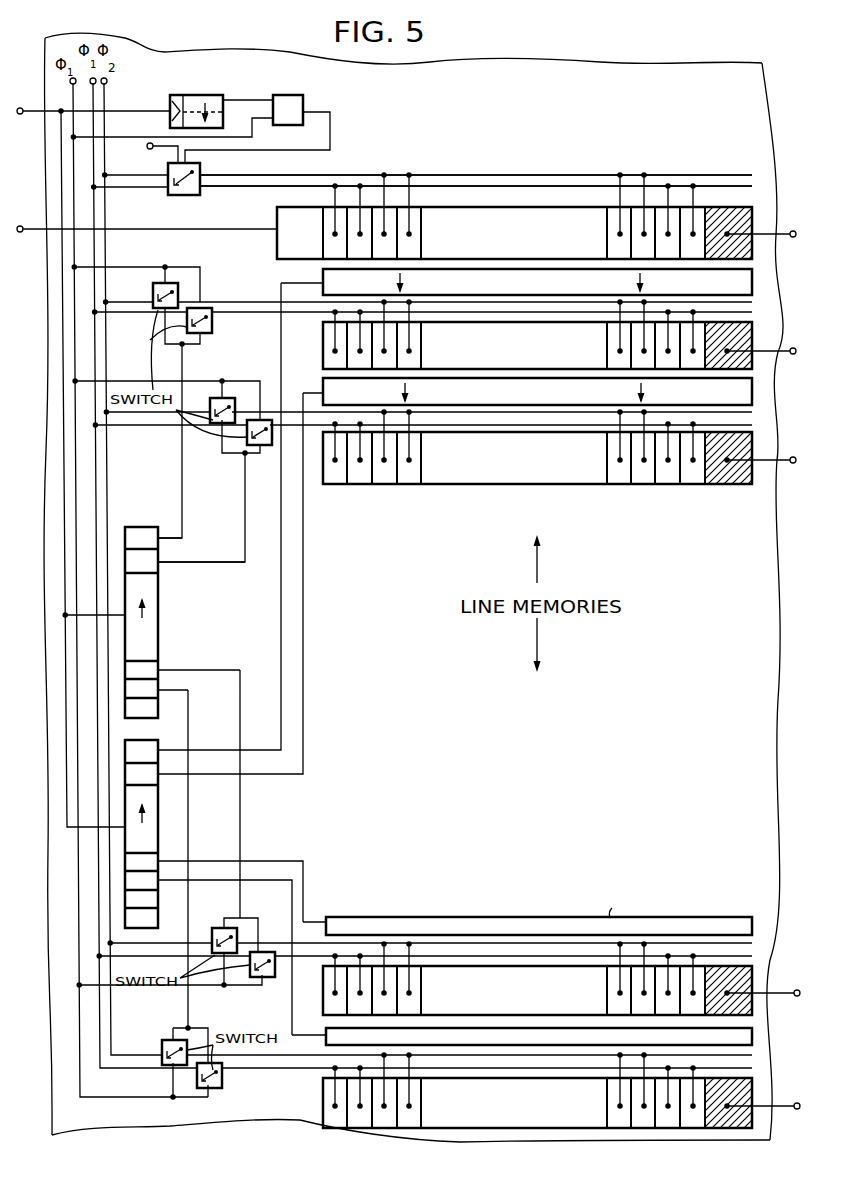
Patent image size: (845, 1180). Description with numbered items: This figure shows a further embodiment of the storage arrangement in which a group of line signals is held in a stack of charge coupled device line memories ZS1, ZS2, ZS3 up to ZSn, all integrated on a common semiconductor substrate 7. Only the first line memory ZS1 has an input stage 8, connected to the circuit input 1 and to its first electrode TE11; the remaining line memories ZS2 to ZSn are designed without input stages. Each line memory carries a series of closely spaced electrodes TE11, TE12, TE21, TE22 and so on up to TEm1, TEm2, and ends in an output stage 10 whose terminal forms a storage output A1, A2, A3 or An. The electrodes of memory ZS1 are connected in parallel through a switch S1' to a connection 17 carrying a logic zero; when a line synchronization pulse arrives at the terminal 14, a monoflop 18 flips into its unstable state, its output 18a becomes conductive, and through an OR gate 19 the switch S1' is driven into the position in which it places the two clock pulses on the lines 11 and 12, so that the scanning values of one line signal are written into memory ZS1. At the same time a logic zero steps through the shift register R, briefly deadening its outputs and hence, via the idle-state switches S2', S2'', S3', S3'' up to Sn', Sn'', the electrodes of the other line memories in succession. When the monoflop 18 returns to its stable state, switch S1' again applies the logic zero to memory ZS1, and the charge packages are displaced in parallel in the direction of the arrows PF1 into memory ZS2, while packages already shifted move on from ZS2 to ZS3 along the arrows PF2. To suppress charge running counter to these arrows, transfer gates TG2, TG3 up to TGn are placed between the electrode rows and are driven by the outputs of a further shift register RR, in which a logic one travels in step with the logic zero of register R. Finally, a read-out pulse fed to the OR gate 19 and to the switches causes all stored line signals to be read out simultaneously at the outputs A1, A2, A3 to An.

The circuit input 1 is at (147, 216).
The semiconductor substrate 7 is at (306, 1110).
The input stage 8 is at (280, 254).
The output stage 10 is at (745, 248).
The clock line 11 is at (478, 158).
The clock line 12 is at (512, 186).
The terminal 14 is at (92, 459).
The connection 17 is at (435, 179).
The monoflop 18 is at (170, 95).
The output 18a is at (224, 100).
The OR gate 19 is at (292, 95).
The line memory ZS1 is at (455, 197).
The line memory ZS2 is at (560, 335).
The line memory ZS3 is at (560, 451).
The line memory ZSn is at (561, 1094).
The arrows PF1 is at (552, 287).
The arrows PF2 is at (553, 394).
The transfer gate TG2 is at (750, 290).
The transfer gate TG3 is at (748, 398).
The transfer gate TGn is at (745, 1034).
The storage output A1 is at (762, 219).
The storage output A2 is at (762, 337).
The storage output A3 is at (762, 474).
The storage output An is at (763, 1118).
The shift register R is at (150, 645).
The further shift register RR is at (160, 806).
The switch S1' is at (460, 189).
The switch S2' is at (153, 291).
The switch S2'' is at (218, 326).
The switch S3' is at (210, 406).
The switch S3'' is at (262, 450).
The switch Sn' is at (162, 1043).
The switch Sn'' is at (227, 1084).
The electrode TE11 is at (331, 207).
The electrode TE12 is at (366, 207).
The electrode TE21 is at (387, 207).
The electrode TE22 is at (413, 207).
The electrode TEm1 is at (613, 207).
The electrode TEm2 is at (638, 207).